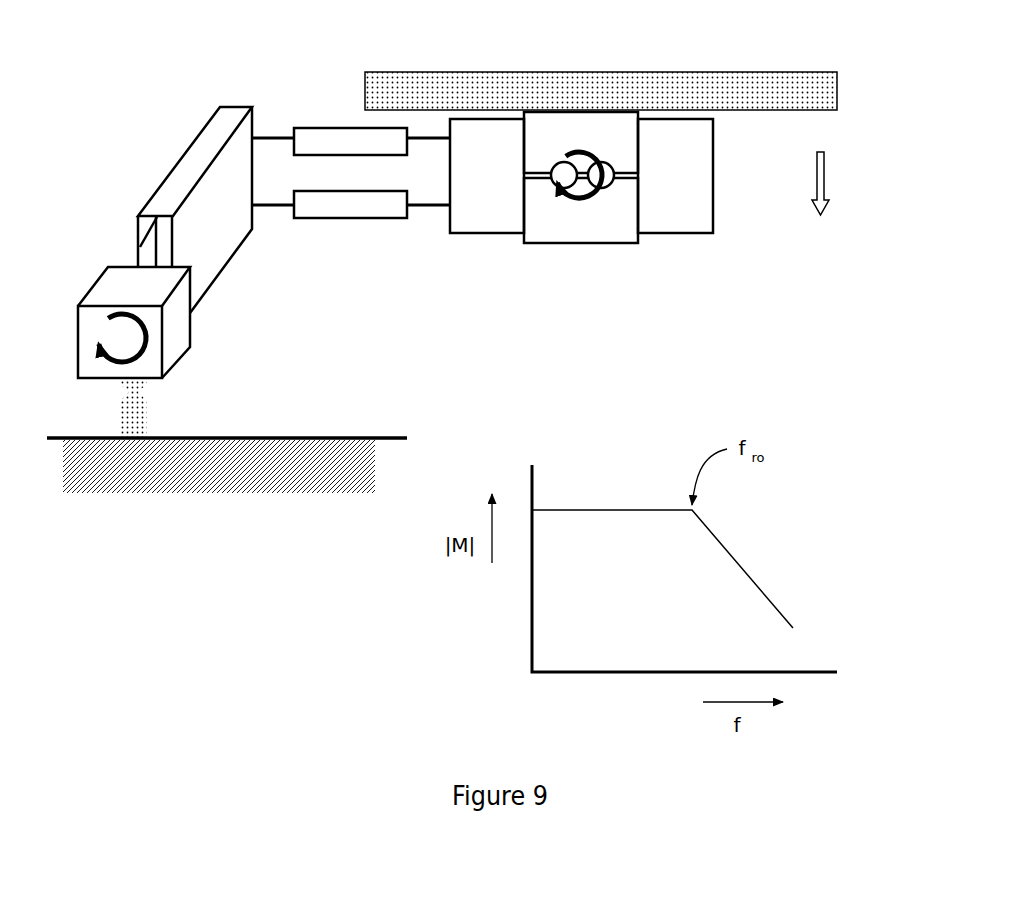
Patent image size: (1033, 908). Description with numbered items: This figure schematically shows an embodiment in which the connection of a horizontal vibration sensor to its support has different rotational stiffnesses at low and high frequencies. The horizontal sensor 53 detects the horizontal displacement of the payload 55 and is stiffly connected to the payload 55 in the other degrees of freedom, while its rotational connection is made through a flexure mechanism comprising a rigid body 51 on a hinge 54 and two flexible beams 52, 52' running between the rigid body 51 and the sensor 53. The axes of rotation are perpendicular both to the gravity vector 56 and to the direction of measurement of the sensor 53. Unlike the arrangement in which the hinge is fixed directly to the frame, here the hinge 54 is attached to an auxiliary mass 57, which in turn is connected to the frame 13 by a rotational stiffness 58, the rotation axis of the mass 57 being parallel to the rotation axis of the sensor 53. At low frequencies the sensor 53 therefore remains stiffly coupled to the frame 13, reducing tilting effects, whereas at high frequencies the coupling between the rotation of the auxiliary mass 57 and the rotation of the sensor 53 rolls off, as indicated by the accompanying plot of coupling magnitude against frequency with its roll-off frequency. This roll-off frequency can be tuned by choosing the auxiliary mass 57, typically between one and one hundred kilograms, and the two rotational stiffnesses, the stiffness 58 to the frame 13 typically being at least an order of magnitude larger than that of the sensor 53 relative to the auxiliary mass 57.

The frame 13 is at (378, 464).
The rigid body 51 is at (181, 145).
The flexible beam 52 is at (351, 239).
The flexible beam 52' is at (351, 104).
The horizontal sensor 53 is at (715, 238).
The hinge 54 is at (139, 227).
The payload 55 is at (732, 59).
The gravity vector 56 is at (806, 183).
The auxiliary mass 57 is at (193, 347).
The rotational stiffness 58 is at (117, 408).